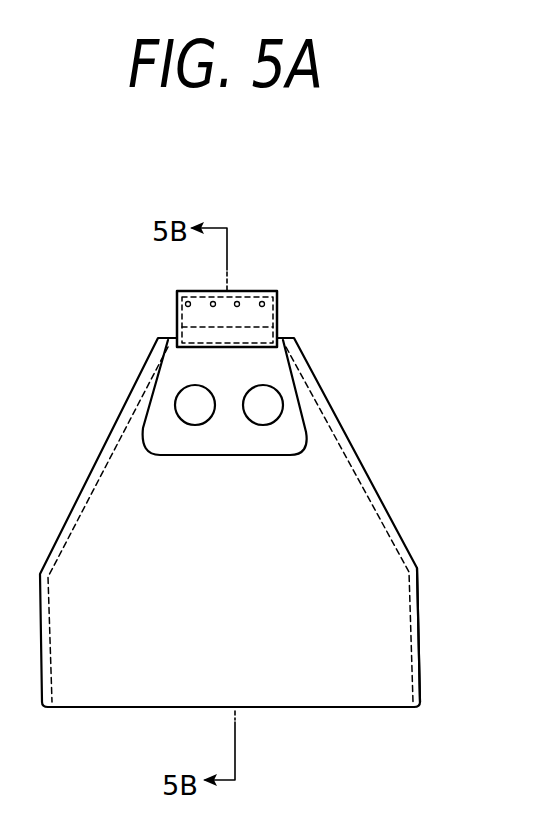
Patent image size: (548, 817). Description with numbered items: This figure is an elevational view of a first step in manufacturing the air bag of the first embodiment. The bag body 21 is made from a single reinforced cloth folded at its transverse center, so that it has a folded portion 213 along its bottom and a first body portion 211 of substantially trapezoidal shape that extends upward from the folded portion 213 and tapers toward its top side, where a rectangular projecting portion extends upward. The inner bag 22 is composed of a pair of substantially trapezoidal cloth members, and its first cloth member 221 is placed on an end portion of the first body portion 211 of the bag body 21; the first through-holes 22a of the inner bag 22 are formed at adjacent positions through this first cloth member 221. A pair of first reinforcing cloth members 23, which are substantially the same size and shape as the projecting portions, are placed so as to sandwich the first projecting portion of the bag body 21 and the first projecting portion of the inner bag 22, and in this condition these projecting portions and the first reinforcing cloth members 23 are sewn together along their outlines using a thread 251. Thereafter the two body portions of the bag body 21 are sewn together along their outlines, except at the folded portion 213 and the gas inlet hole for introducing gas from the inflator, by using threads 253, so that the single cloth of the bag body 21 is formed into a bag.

The bag body 21 is at (409, 551).
The first body portion 211 is at (380, 592).
The folded portion 213 is at (330, 707).
The inner bag 22 is at (282, 440).
The first through-holes 22a is at (192, 410).
The first cloth member 221 is at (272, 370).
The first reinforcing cloth members 23 is at (197, 318).
The thread 251 is at (277, 308).
The threads 253 is at (377, 503).